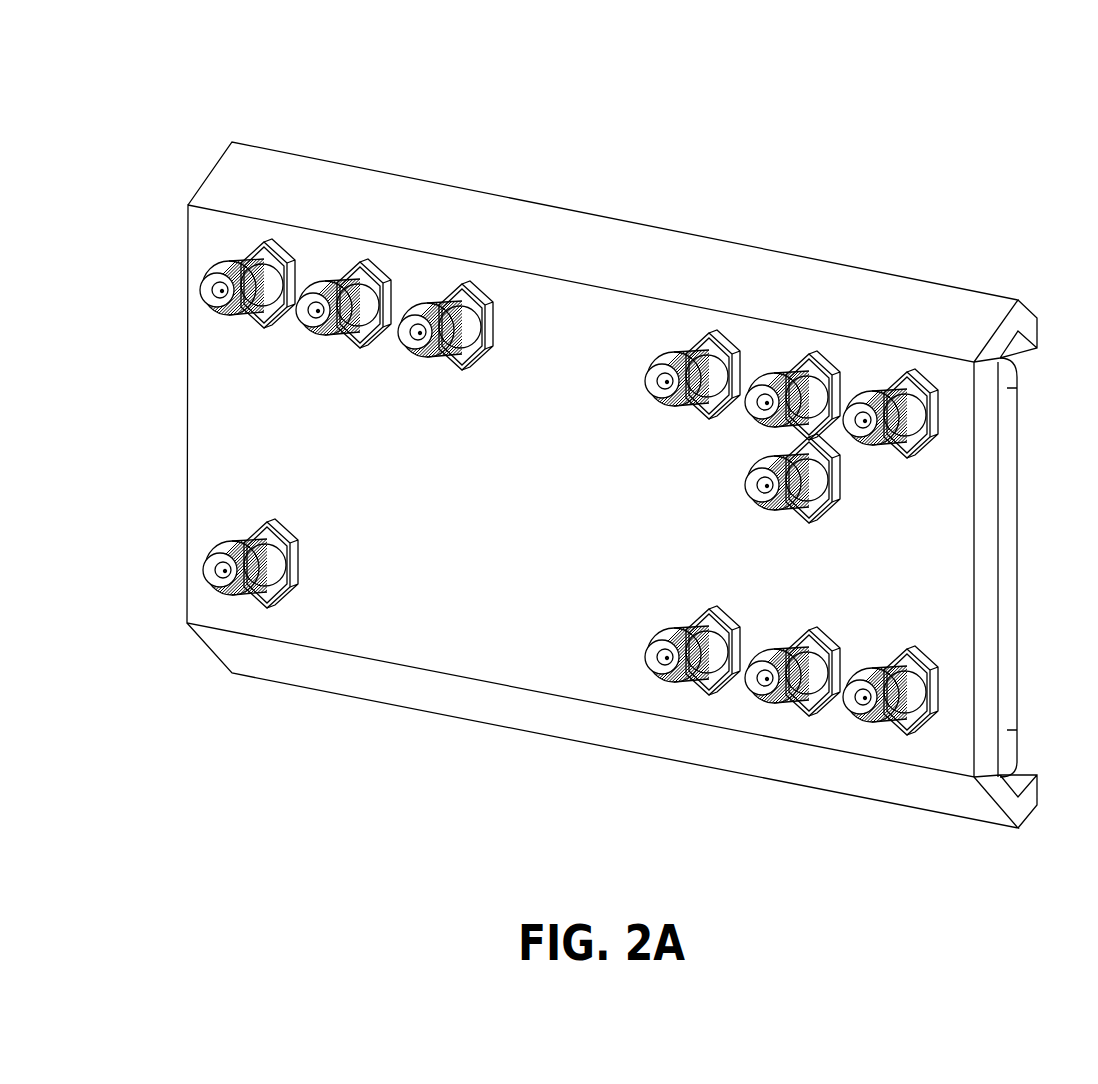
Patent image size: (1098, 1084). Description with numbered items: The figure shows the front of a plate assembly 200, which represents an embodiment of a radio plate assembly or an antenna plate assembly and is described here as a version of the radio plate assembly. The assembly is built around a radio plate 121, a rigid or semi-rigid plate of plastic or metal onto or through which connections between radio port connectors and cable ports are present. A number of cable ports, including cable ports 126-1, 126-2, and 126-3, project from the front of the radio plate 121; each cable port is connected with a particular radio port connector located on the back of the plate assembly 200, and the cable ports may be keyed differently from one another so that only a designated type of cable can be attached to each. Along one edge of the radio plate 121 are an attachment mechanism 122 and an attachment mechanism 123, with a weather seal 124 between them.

The plate assembly 200 is at (156, 97).
The radio plate 121 is at (545, 488).
The attachment mechanism 122 is at (1027, 310).
The attachment mechanism 123 is at (1028, 808).
The weather seal 124 is at (1018, 412).
The cable port 126-1 is at (279, 250).
The cable port 126-2 is at (386, 278).
The cable port 126-3 is at (480, 298).